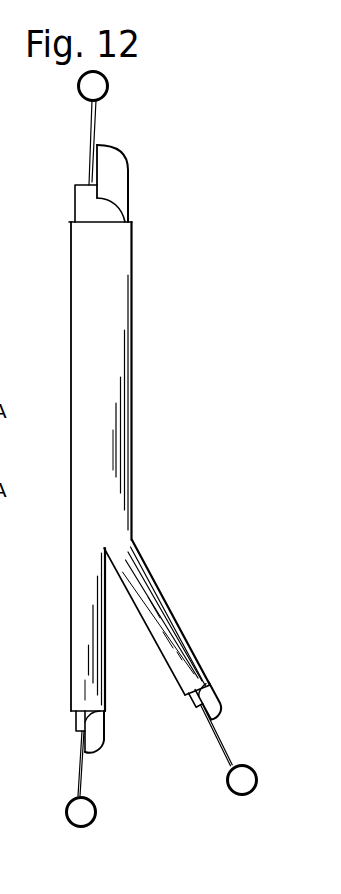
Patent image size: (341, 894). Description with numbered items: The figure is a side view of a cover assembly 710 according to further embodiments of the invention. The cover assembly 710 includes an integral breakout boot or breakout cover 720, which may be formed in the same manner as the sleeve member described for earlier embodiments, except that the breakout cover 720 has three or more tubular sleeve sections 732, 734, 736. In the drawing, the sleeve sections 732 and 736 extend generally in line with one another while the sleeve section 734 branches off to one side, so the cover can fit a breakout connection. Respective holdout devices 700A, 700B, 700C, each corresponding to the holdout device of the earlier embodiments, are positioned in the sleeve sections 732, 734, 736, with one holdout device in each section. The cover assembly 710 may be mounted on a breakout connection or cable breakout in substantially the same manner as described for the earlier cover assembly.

The holdout device 700A is at (118, 143).
The holdout device 700B is at (213, 700).
The holdout device 700C is at (101, 743).
The cover assembly 710 is at (172, 189).
The breakout cover 720 is at (137, 402).
The tubular sleeve section 732 is at (105, 278).
The tubular sleeve section 734 is at (128, 560).
The tubular sleeve section 736 is at (88, 634).